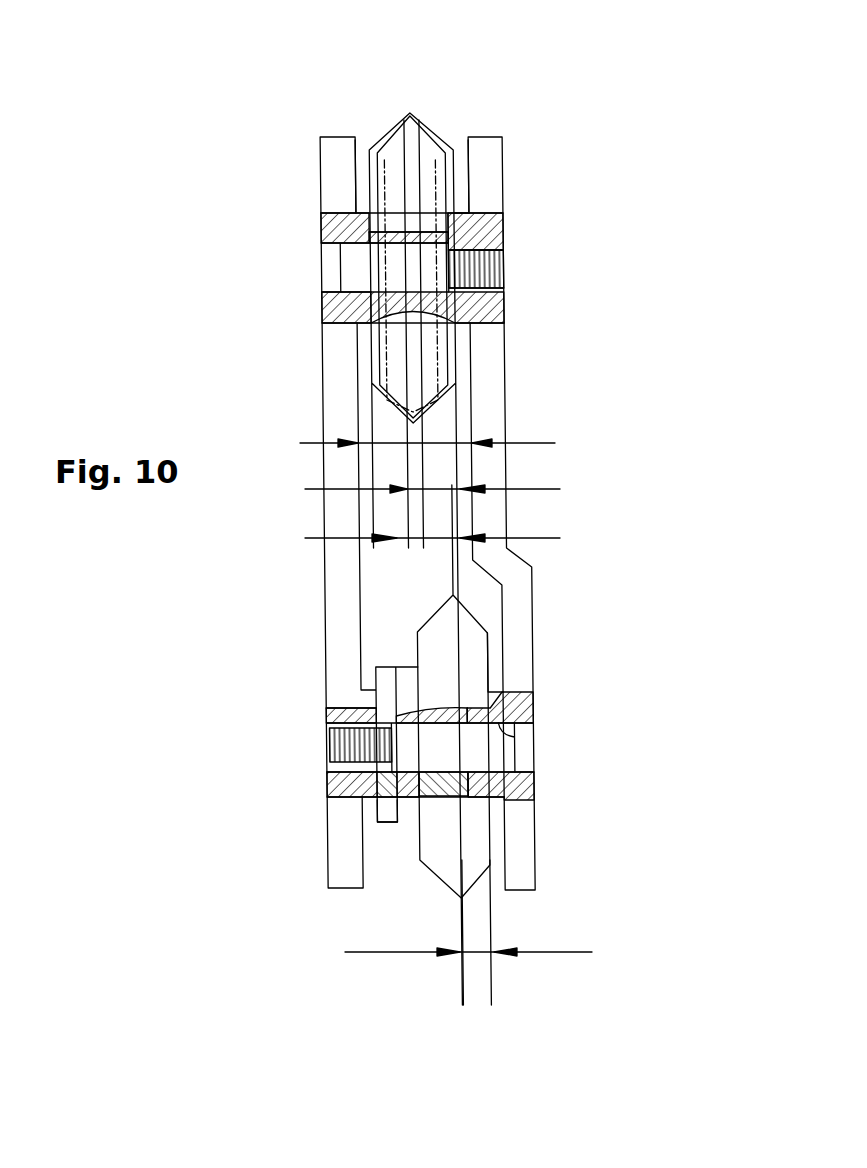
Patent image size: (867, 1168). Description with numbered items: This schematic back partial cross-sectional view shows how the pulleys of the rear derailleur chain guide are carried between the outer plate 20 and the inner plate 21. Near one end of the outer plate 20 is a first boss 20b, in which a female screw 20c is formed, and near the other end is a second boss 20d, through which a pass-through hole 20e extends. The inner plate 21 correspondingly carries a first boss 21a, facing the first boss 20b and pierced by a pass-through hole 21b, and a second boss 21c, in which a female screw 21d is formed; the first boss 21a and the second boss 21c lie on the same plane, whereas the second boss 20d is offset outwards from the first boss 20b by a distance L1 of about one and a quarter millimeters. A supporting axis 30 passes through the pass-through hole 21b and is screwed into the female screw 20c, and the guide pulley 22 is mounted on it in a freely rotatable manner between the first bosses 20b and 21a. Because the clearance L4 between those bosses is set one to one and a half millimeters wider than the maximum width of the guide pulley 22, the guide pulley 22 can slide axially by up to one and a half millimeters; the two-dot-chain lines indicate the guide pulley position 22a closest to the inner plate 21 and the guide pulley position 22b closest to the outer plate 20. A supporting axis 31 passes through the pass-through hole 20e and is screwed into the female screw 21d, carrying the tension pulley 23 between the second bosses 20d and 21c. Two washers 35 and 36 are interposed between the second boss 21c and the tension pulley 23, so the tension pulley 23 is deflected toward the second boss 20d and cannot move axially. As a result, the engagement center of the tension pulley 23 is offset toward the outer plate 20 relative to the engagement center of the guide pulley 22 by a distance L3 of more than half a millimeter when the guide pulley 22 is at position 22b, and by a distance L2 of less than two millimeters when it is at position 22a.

The outer plate 20 is at (512, 295).
The first boss 20b is at (467, 210).
The female screw 20c is at (500, 270).
The second boss 20d is at (502, 692).
The pass-through hole 20e is at (503, 737).
The inner plate 21 is at (337, 415).
The first boss 21a is at (355, 208).
The pass-through hole 21b is at (360, 268).
The second boss 21c is at (368, 800).
The female screw 21d is at (333, 745).
The guide pulley 22 is at (433, 135).
The guide pulley position 22a is at (390, 138).
The guide pulley position 22b is at (457, 172).
The tension pulley 23 is at (435, 653).
The supporting axis 30 is at (365, 260).
The supporting axis 31 is at (480, 753).
The washer 35 is at (387, 827).
The washer 36 is at (412, 820).
The distance L1 is at (567, 952).
The distance L2 is at (537, 540).
The distance L3 is at (537, 489).
The clearance L4 is at (513, 443).